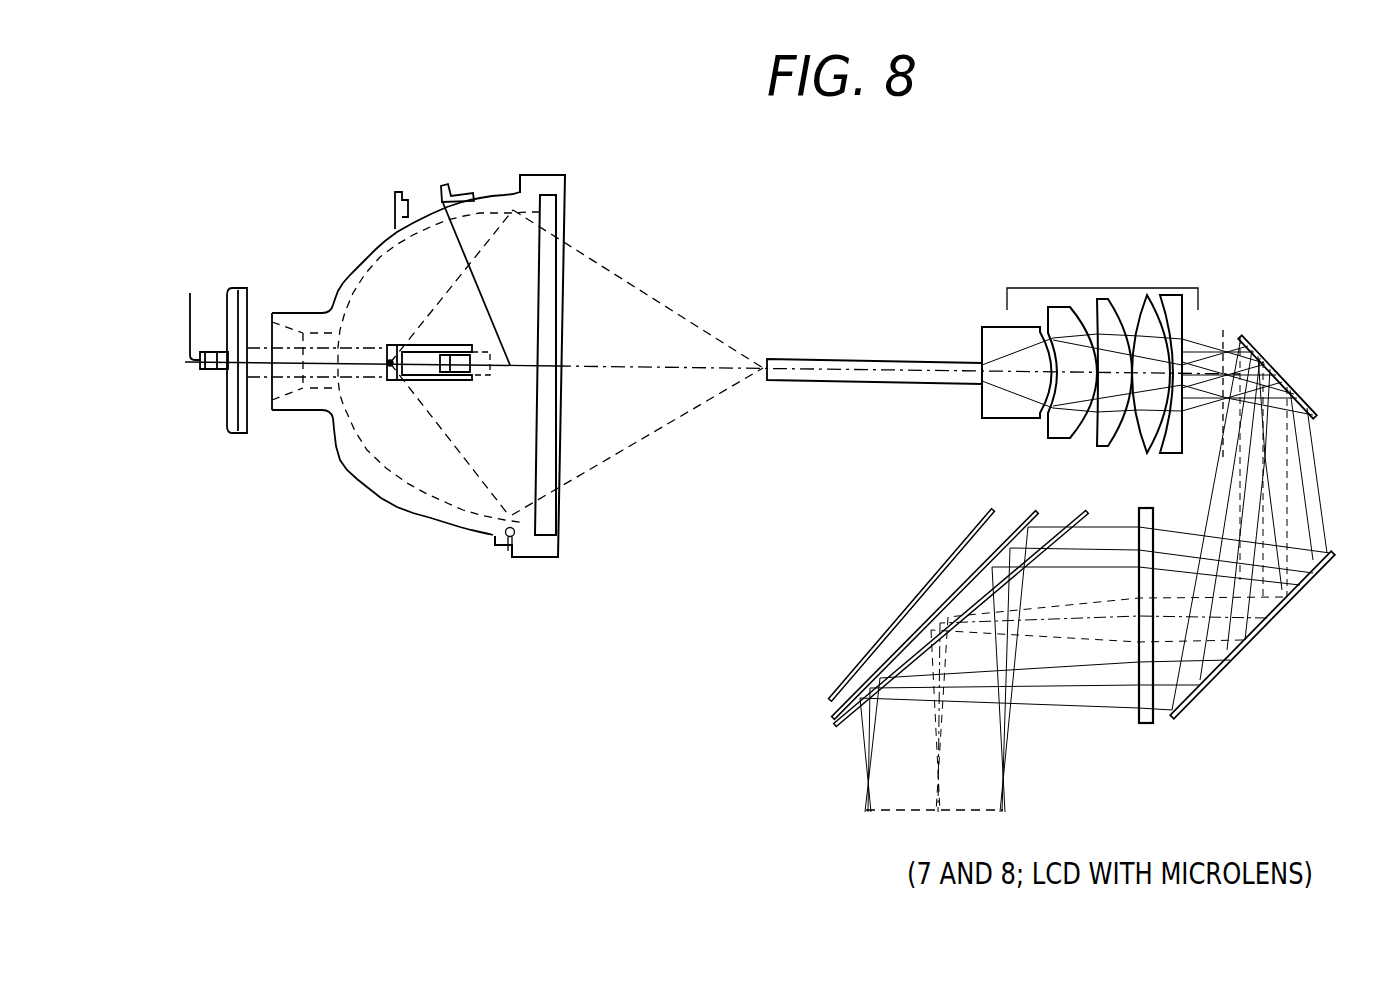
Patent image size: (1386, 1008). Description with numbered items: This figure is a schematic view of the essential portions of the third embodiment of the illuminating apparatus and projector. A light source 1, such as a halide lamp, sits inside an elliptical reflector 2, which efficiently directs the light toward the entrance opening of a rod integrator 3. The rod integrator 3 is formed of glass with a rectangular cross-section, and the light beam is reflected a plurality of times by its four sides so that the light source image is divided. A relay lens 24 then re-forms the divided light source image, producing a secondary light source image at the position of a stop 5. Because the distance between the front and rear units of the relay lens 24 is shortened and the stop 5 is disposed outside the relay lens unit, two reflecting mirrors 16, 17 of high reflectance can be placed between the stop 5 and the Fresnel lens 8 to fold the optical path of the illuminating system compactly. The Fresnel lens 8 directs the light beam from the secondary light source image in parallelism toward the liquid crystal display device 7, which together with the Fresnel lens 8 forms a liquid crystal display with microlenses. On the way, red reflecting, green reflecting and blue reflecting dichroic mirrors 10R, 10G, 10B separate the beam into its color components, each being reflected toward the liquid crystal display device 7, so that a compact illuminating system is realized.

The light source 1 is at (390, 366).
The elliptical reflector 2 is at (559, 175).
The rod integrator 3 is at (852, 358).
The relay lens 24 is at (1103, 288).
The stop 5 is at (1225, 330).
The reflecting mirror 16 is at (1307, 403).
The reflecting mirror 17 is at (1313, 577).
The red reflecting dichroic mirror 10R is at (1083, 512).
The green reflecting dichroic mirror 10G is at (947, 600).
The blue reflecting dichroic mirror 10B is at (862, 657).
The Fresnel lens 8 is at (1143, 723).
The liquid crystal display device 7 is at (970, 812).